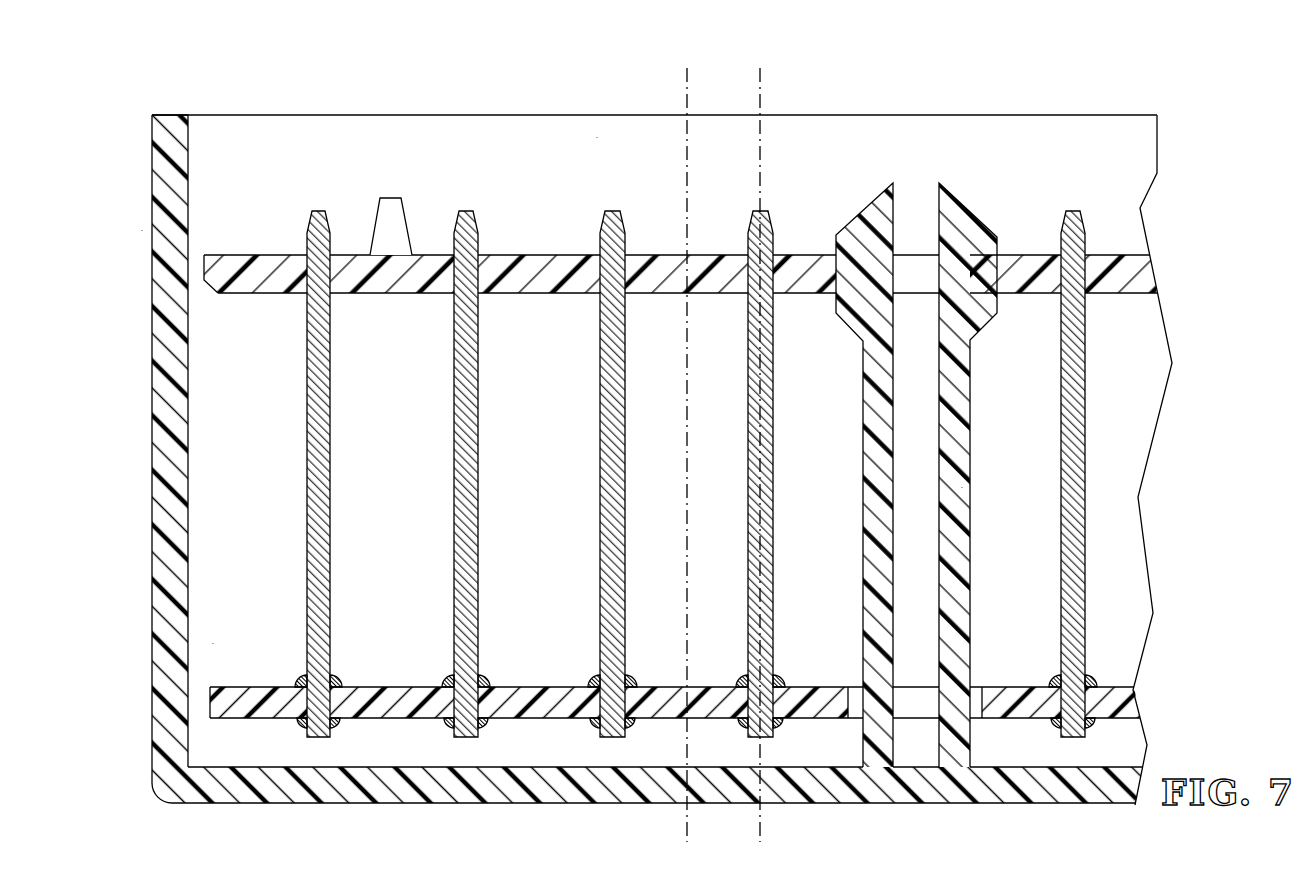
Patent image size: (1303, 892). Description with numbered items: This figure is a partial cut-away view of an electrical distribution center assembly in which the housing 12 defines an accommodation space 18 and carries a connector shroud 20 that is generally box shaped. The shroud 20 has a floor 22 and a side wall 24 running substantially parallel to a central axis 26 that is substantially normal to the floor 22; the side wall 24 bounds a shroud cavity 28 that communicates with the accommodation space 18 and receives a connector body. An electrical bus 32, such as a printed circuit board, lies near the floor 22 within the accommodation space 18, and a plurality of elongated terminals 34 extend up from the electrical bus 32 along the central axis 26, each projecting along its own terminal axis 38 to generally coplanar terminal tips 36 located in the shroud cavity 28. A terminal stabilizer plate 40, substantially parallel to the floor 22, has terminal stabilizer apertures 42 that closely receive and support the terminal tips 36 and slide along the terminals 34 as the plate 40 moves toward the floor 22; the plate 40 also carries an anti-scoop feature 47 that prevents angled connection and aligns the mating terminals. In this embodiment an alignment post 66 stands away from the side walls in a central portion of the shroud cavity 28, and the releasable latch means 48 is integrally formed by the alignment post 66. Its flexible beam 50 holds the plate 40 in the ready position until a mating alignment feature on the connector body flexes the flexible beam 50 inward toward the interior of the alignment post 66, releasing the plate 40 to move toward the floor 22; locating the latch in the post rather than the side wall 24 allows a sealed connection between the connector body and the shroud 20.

The housing 12 is at (143, 231).
The accommodation space 18 is at (213, 644).
The connector shroud 20 is at (392, 115).
The floor 22 is at (360, 803).
The side wall 24 is at (152, 245).
The central axis 26 is at (687, 832).
The shroud cavity 28 is at (597, 137).
The electrical bus 32 is at (215, 700).
The terminals 34 is at (317, 506).
The terminal tips 36 is at (1070, 213).
The terminal axis 38 is at (760, 832).
The terminal stabilizer plate 40 is at (513, 255).
The terminal stabilizer apertures 42 is at (1100, 285).
The anti-scoop feature 47 is at (387, 212).
The releasable latch means 48 is at (950, 207).
The flexible beam 50 is at (962, 487).
The alignment post 66 is at (913, 190).